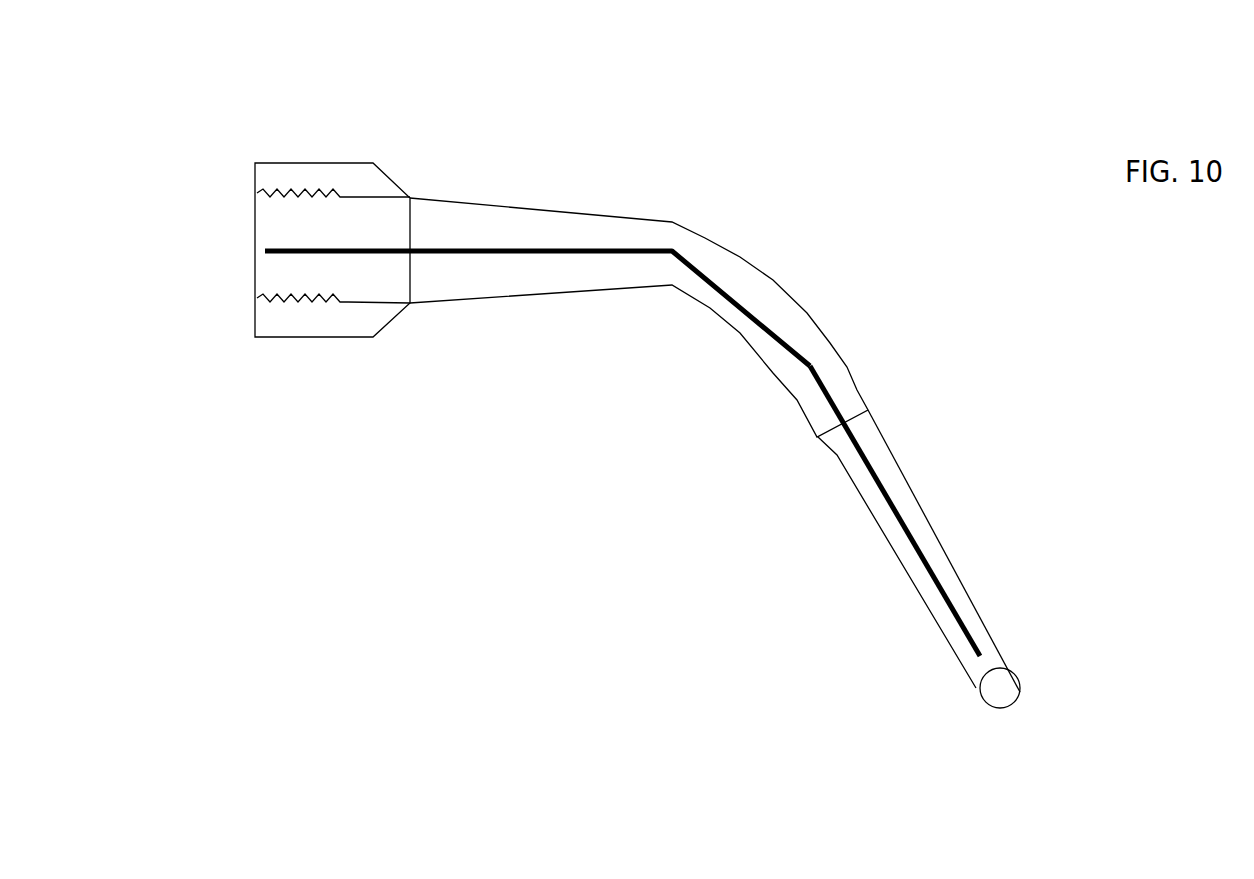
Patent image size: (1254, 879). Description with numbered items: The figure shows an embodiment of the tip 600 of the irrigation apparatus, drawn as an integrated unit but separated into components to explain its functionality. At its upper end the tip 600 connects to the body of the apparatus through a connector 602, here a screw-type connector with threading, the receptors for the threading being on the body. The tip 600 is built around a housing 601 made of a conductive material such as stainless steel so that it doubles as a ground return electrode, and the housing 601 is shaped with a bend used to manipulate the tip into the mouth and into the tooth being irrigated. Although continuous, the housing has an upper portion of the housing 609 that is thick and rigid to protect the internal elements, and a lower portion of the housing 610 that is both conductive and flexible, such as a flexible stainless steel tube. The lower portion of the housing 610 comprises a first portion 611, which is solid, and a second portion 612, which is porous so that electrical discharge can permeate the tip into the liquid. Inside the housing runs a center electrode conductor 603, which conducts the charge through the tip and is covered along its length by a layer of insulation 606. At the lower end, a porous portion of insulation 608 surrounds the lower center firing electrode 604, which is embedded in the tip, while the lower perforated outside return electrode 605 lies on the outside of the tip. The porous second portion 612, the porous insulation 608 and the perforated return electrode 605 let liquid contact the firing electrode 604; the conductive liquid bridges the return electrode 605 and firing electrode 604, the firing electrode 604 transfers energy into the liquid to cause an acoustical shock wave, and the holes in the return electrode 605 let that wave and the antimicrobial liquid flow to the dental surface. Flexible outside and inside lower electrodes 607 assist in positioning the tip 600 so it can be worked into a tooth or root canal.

The tip 600 is at (335, 104).
The housing 601 is at (855, 508).
The connector 602 is at (273, 308).
The center electrode conductor 603 is at (250, 252).
The lower center firing electrode 604 is at (981, 661).
The lower perforated outside return electrode 605 is at (965, 675).
The insulation 606 is at (888, 487).
The flexible outside and inside lower electrodes 607 is at (980, 593).
The porous portion of insulation 608 is at (950, 620).
The upper portion of the housing 609 is at (850, 365).
The lower portion of the housing 610 is at (835, 456).
The first portion 611 is at (935, 538).
The second portion 612 is at (947, 549).